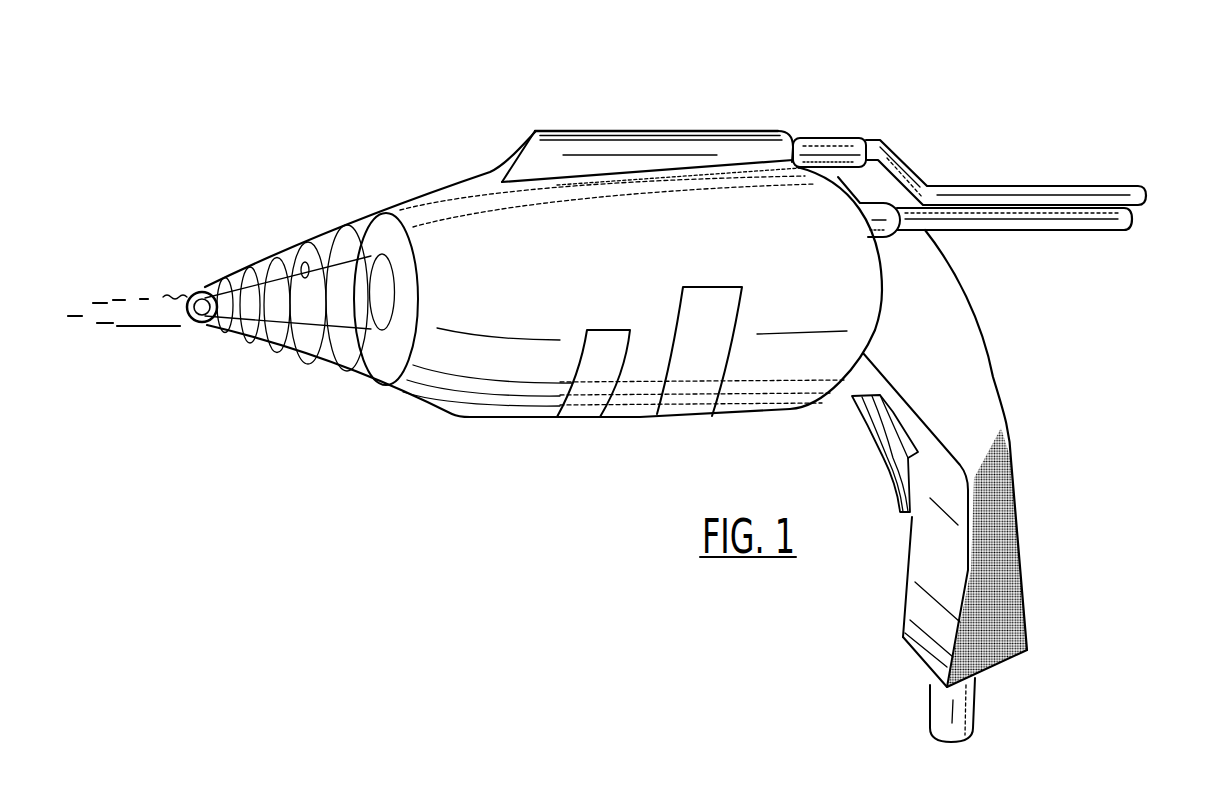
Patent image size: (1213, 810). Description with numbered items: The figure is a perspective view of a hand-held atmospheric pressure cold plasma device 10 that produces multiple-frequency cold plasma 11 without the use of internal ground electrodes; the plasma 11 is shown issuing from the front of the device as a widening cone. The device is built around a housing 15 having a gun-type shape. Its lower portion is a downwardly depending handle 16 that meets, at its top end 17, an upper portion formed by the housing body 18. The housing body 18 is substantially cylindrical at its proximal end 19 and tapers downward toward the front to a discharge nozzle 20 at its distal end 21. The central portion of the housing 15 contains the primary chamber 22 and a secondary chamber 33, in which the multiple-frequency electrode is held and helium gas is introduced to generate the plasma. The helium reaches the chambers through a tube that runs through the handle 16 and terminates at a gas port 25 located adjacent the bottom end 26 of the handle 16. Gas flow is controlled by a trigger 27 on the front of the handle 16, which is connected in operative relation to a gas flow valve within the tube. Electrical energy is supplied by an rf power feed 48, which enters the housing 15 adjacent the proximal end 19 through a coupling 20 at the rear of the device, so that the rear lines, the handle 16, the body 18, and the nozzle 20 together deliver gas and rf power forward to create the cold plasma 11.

The hand-held atmospheric pressure cold plasma device 10 is at (604, 112).
The multiple-frequency cold plasma 11 is at (307, 243).
The housing 15 is at (452, 183).
The handle 16 is at (977, 392).
The top end 17 is at (950, 247).
The housing body 18 is at (537, 262).
The proximal end 19 is at (880, 270).
The discharge nozzle / coupling 20 is at (189, 322).
The distal end 21 is at (205, 280).
The primary chamber 22 is at (700, 420).
The gas port 25 is at (938, 707).
The bottom end 26 is at (1002, 667).
The trigger 27 is at (897, 483).
The secondary chamber 33 is at (586, 402).
The rf power feed 48 is at (1142, 216).